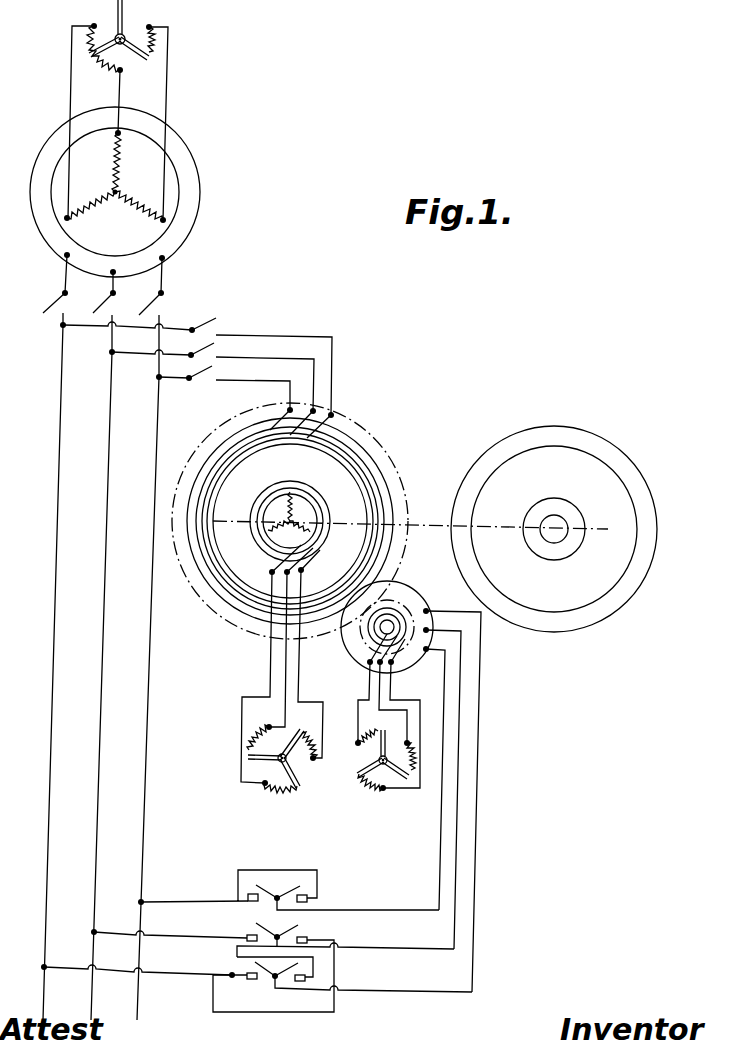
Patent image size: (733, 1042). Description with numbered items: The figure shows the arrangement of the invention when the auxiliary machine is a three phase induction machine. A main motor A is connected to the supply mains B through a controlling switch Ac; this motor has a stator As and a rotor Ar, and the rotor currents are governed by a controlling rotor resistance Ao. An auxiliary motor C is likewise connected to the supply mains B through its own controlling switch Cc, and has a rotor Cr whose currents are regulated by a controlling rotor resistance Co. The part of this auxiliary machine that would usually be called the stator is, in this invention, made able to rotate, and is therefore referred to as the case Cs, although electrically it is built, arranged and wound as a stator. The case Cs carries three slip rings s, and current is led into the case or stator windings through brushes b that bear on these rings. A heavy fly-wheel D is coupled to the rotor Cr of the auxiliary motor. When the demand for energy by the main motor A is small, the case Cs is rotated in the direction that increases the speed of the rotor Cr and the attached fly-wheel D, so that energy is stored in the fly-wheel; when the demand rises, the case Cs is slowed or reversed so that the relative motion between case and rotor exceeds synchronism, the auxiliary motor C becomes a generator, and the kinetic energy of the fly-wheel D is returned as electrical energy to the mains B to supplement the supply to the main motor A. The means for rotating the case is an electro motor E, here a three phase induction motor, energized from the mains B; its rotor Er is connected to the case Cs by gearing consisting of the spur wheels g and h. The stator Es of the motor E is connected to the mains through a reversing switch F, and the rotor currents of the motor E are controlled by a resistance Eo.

The main motor A is at (117, 192).
The rotor Ar is at (152, 188).
The stator As is at (175, 248).
The controlling rotor resistance Ao is at (133, 22).
The controlling switch Ac is at (103, 332).
The supply mains B is at (150, 632).
The controlling switch Cc is at (192, 323).
The auxiliary motor C is at (390, 521).
The case Cs is at (362, 447).
The rotor Cr is at (283, 502).
The slip rings s is at (372, 488).
The brushes b is at (283, 425).
The spur wheel h is at (405, 538).
The fly-wheel D is at (642, 485).
The electro motor E is at (417, 781).
The rotor Er is at (395, 622).
The stator Es is at (493, 648).
The spur wheel g is at (364, 640).
The controlling rotor resistance Co is at (305, 748).
The resistance Eo is at (373, 777).
The reversing switch F is at (263, 1002).